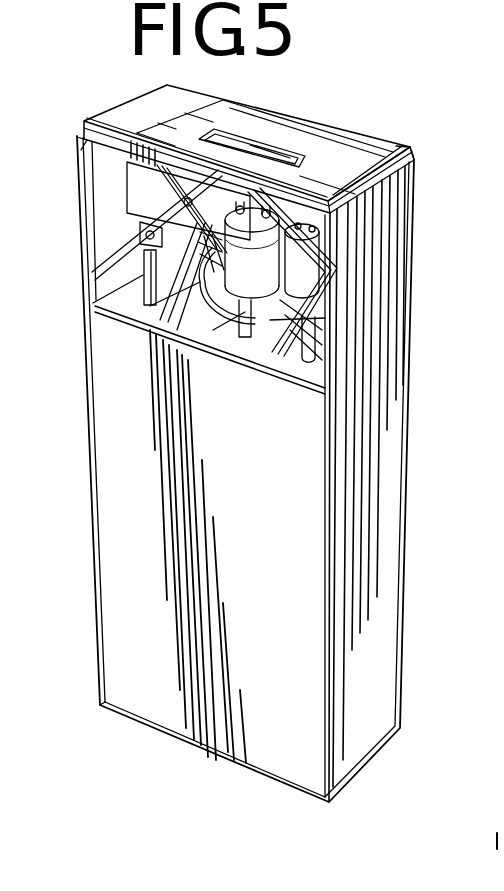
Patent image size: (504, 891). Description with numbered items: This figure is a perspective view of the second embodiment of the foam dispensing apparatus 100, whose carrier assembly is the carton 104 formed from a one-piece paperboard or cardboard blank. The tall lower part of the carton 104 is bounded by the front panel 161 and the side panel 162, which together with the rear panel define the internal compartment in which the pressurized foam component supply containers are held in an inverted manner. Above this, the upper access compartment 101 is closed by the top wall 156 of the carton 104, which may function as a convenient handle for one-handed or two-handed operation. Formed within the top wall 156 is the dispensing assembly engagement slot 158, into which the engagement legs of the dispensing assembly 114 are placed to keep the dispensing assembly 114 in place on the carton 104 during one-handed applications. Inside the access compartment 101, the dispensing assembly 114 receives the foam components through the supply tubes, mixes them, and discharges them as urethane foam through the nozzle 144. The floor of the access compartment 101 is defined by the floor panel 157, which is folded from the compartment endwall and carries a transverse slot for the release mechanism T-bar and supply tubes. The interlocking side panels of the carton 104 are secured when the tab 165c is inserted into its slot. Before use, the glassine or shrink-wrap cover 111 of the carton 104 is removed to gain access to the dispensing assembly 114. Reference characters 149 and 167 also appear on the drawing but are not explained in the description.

The foam dispensing apparatus 100 is at (137, 437).
The upper access compartment 101 is at (117, 287).
The carton 104 is at (138, 612).
The glassine or shrink-wrap cover 111 is at (93, 244).
The dispensing assembly 114 is at (125, 192).
The nozzle 144 is at (250, 280).
The top corner 149 is at (404, 148).
The top wall 156 is at (122, 117).
The floor panel 157 is at (165, 306).
The dispensing assembly engagement slot 158 is at (292, 157).
The front panel 161 is at (161, 690).
The side panel 162 is at (383, 459).
The tab 165c is at (102, 566).
The lid rim 167 is at (353, 161).